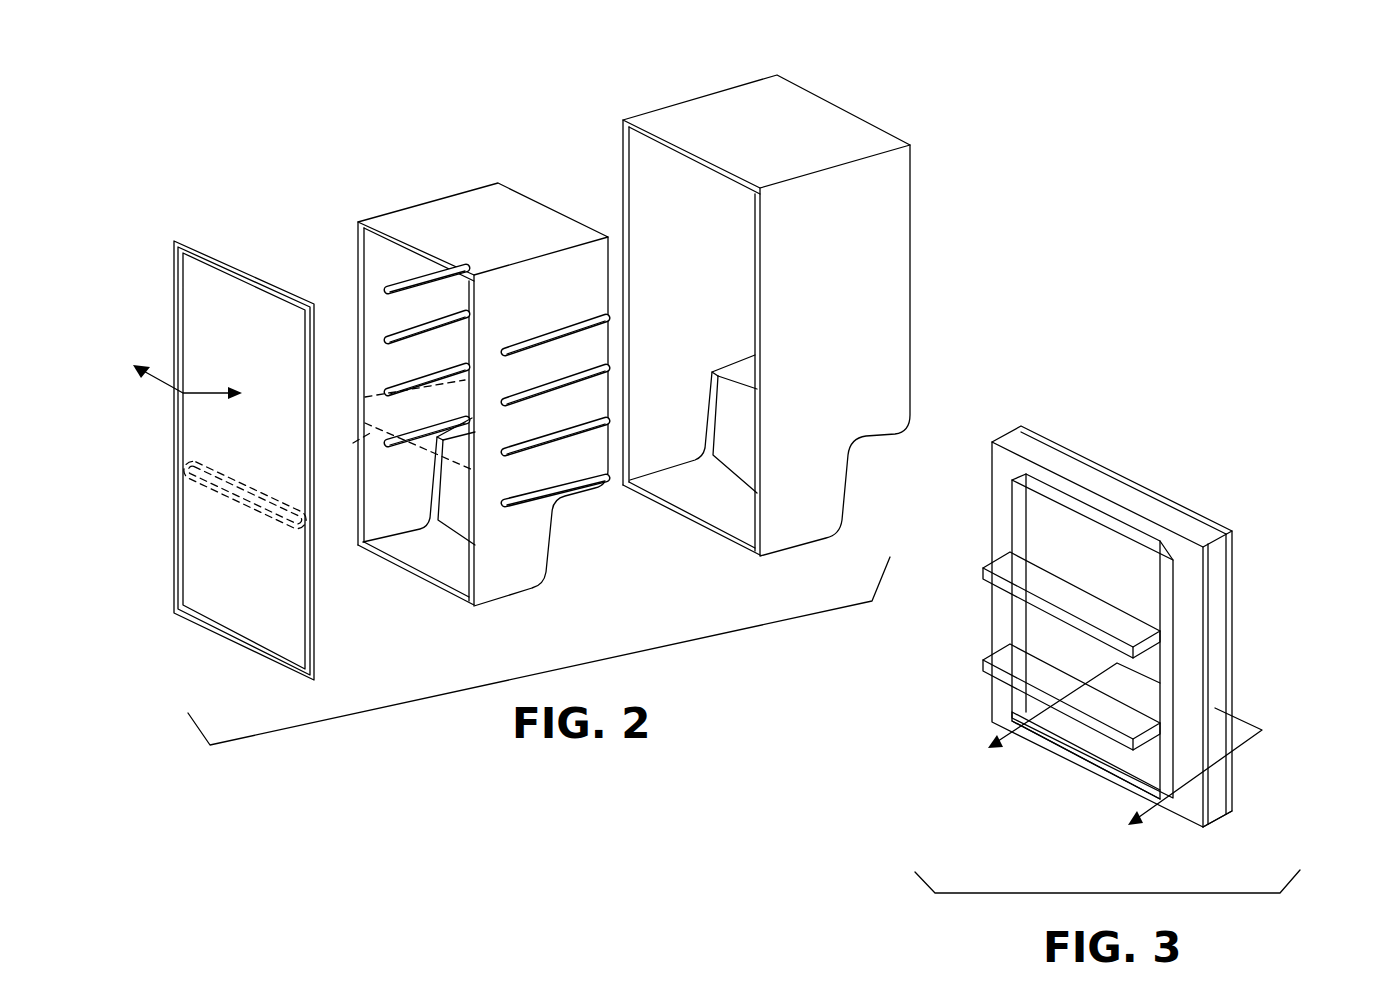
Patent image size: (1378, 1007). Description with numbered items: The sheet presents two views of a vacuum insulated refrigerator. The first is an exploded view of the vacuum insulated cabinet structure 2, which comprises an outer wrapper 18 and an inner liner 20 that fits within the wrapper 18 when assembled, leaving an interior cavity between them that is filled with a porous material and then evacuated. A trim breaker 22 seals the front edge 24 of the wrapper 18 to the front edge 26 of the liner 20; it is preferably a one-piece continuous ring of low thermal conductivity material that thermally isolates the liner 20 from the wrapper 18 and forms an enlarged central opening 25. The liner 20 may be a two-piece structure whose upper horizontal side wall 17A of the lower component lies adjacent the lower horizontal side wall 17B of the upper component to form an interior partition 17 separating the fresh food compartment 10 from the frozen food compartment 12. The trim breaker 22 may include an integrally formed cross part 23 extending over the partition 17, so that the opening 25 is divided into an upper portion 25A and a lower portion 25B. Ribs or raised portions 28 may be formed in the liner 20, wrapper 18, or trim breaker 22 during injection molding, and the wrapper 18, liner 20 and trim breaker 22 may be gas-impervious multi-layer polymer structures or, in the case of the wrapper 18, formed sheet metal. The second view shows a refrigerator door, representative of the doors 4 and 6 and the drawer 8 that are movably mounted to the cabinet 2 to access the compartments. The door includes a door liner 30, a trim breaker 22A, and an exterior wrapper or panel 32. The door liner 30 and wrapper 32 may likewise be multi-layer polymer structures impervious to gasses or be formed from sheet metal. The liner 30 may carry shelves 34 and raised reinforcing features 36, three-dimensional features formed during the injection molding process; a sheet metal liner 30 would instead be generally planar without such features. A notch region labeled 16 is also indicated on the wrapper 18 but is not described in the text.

In FIG. 2, the vacuum insulated cabinet structure 2 is at (501, 138).
In FIG. 3, the door 4 is at (1116, 605).
In FIG. 3, the door 6 is at (1116, 605).
In FIG. 3, the drawer 8 is at (1136, 416).
In FIG. 2, the fresh food compartment 10 is at (405, 264).
In FIG. 2, the frozen food compartment 12 is at (450, 573).
In FIG. 2, the notch 16 is at (876, 458).
In FIG. 2, the interior partition 17 is at (383, 380).
In FIG. 2, the upper horizontal side wall 17A is at (370, 395).
In FIG. 2, the lower horizontal side wall 17B is at (353, 443).
In FIG. 2, the outer wrapper 18 is at (872, 123).
In FIG. 2, the inner liner 20 is at (428, 202).
In FIG. 2, the trim breaker 22 is at (203, 252).
In FIG. 3, the trim breaker 22A is at (1218, 822).
In FIG. 2, the cross part 23 is at (229, 513).
In FIG. 2, the front edge 24 is at (622, 155).
In FIG. 2, the central opening 25 is at (238, 320).
In FIG. 2, the upper portion 25A is at (222, 452).
In FIG. 2, the lower portion 25B is at (232, 606).
In FIG. 2, the front edge 26 is at (358, 258).
In FIG. 2, the ribs or raised portions 28 is at (388, 445).
In FIG. 3, the door liner 30 is at (1110, 794).
In FIG. 3, the exterior wrapper or panel 32 is at (1248, 600).
In FIG. 3, the shelves 34 is at (985, 572).
In FIG. 3, the raised reinforcing features 36 is at (1012, 510).